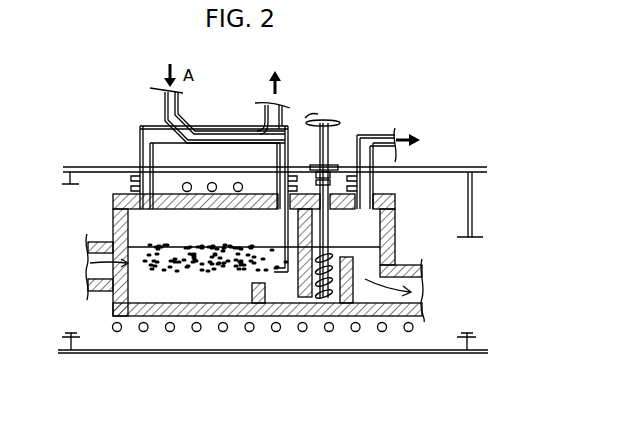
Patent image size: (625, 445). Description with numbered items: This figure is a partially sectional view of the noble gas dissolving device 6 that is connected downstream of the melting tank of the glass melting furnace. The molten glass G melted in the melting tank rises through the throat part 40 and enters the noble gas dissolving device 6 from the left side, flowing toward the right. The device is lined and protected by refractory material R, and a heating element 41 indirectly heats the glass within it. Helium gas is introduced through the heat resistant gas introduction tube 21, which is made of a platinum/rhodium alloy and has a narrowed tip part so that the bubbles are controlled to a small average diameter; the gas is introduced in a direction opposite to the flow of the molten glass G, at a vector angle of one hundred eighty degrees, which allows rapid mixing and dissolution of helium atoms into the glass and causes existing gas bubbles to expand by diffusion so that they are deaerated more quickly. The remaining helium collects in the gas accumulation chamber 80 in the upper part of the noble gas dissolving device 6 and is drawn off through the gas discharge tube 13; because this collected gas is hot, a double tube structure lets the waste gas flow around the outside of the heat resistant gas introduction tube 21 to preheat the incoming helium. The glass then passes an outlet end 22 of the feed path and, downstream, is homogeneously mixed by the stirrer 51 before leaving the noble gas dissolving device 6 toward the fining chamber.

The heat resistant gas introduction tube 21 is at (163, 108).
The feed pipe outlet 22 is at (273, 272).
The stirrer 51 is at (330, 140).
The gas discharge tube 13 is at (373, 132).
The throat part 40 is at (413, 305).
The refractory material R is at (153, 313).
The gas accumulation chamber 80 is at (160, 225).
The molten glass G is at (227, 292).
The heating element 41 is at (327, 332).
The noble gas dissolving device 6 is at (128, 369).